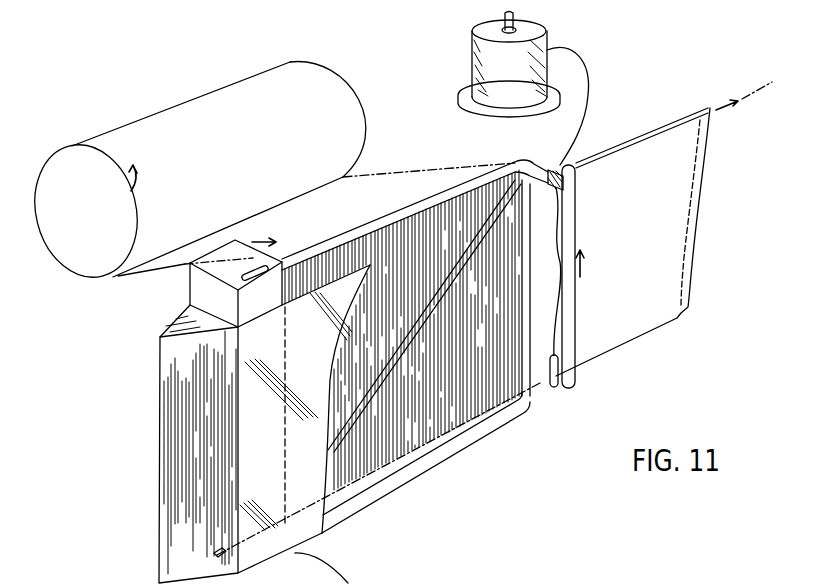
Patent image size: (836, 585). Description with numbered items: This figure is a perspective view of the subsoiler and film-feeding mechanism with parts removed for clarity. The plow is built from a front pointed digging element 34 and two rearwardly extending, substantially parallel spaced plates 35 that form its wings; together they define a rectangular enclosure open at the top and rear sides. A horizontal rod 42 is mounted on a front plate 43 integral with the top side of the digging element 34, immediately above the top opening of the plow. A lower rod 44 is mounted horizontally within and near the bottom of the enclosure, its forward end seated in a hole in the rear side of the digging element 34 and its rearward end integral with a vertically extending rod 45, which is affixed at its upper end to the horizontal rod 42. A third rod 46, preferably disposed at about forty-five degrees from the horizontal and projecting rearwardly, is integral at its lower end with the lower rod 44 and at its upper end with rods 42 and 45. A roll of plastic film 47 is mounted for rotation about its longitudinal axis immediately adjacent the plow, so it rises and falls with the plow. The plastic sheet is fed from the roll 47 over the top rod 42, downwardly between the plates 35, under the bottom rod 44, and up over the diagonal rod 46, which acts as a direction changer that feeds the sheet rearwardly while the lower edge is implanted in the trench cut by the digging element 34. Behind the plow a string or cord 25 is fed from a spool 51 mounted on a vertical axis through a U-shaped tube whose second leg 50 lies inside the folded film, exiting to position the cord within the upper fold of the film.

The string or cord 25 is at (588, 98).
The digging element 34 is at (172, 432).
The plates 35 is at (320, 380).
The horizontal rod 42 is at (333, 244).
The front plate 43 is at (195, 287).
The lower rod 44 is at (416, 462).
The vertically extending rod 45 is at (546, 388).
The third rod 46 is at (403, 350).
The roll of plastic film 47 is at (193, 100).
The second leg 50 is at (571, 302).
The spool 51 is at (556, 62).